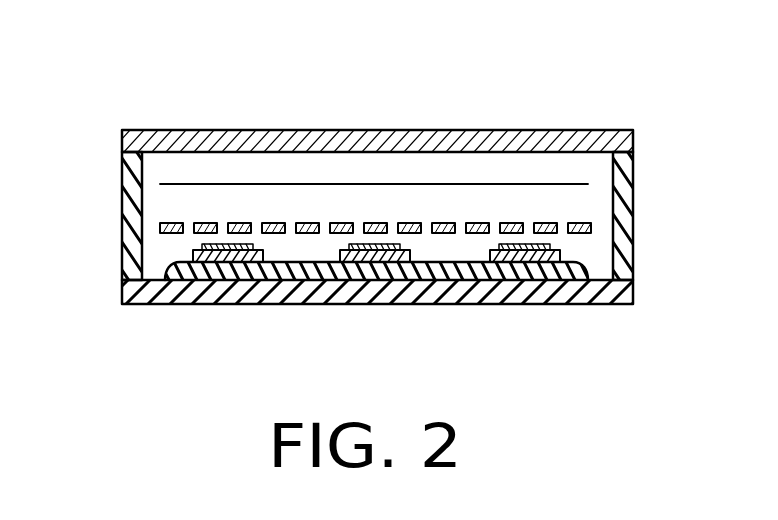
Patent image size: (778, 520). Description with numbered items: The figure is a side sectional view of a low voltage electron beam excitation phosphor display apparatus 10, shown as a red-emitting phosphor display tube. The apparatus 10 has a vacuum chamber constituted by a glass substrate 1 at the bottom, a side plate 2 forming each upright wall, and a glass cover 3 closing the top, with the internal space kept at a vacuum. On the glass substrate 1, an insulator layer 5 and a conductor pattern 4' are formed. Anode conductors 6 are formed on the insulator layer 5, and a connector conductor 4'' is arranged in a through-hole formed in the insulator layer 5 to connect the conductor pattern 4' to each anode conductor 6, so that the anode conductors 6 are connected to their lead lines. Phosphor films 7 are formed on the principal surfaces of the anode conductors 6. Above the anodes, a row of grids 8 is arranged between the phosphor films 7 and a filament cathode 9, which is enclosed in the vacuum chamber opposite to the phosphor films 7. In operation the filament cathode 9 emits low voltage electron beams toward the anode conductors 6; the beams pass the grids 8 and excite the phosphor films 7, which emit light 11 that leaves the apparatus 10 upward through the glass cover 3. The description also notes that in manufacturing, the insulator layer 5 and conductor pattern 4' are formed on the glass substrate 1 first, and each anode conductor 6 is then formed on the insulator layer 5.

The glass substrate 1 is at (628, 293).
The side plate 2 is at (122, 176).
The glass cover 3 is at (622, 130).
The conductor pattern 4' is at (228, 324).
The connector conductor 4'' is at (528, 317).
The insulator layer 5 is at (168, 278).
The anode conductor 6 is at (195, 250).
The phosphor film 7 is at (553, 244).
The grid 8 is at (582, 227).
The filament cathode 9 is at (588, 184).
The low voltage electron beam excitation phosphor display apparatus 10 is at (548, 98).
The light 11 is at (440, 33).